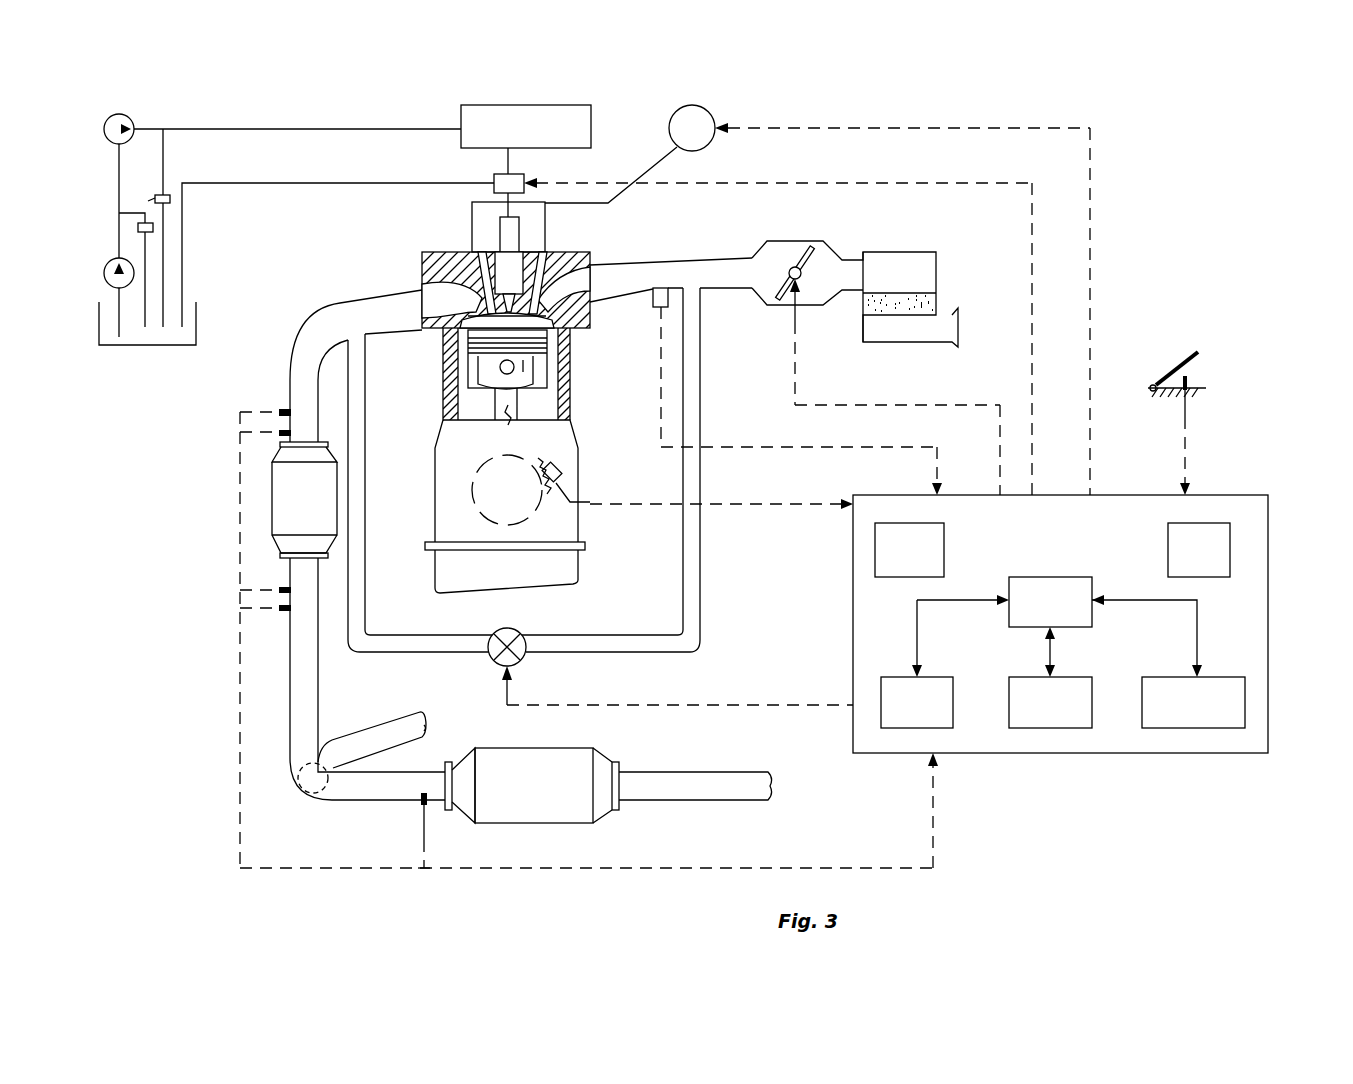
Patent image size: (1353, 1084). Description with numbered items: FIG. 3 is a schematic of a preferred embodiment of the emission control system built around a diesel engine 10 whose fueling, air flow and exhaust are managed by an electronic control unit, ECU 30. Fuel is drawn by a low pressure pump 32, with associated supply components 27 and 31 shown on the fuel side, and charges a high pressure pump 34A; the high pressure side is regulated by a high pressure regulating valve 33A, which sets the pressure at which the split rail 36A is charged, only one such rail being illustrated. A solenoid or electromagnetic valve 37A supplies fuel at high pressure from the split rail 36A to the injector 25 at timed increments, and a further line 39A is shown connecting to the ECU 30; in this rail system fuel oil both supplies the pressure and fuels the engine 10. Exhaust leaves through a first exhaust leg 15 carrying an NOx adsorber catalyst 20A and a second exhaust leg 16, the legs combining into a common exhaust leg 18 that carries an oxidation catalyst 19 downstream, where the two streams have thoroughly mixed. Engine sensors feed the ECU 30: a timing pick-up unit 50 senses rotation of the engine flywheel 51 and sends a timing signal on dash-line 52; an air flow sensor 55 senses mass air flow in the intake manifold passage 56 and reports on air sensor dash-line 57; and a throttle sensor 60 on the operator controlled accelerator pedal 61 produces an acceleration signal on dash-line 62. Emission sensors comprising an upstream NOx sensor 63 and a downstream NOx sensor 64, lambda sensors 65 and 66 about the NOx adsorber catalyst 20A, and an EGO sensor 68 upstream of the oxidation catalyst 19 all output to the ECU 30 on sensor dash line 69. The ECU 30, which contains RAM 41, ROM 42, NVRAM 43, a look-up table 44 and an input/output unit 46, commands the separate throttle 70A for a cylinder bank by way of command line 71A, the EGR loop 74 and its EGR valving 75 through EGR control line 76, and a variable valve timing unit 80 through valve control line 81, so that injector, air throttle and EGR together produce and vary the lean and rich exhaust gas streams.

The engine 10 is at (412, 441).
The first exhaust leg 15 is at (289, 676).
The second exhaust leg 16 is at (373, 722).
The common exhaust leg 18 is at (393, 802).
The oxidation catalyst 19 is at (537, 823).
The NOx adsorber catalyst 20A is at (272, 497).
The injector 25 is at (519, 240).
The fuel tank 27 is at (196, 320).
The ECU 30 is at (1058, 659).
The fuel filter 31 is at (153, 227).
The low pressure pump 32 is at (126, 288).
The high pressure regulating valve 33A is at (170, 196).
The high pressure pump 34A is at (131, 120).
The split rail 36A is at (591, 124).
The solenoid valve 37A is at (527, 172).
The signal line 39A is at (812, 181).
The RAM 41 is at (910, 728).
The ROM 42 is at (1070, 728).
The NVRAM 43 is at (1200, 728).
The look-up table 44 is at (875, 550).
The input/output unit 46 is at (1230, 550).
The timing pick-up unit 50 is at (560, 474).
The engine flywheel 51 is at (545, 497).
The timing signal line 52 is at (712, 515).
The air flow sensor 55 is at (653, 306).
The intake manifold passage 56 is at (671, 281).
The air sensor line 57 is at (728, 443).
The throttle sensor 60 is at (1190, 381).
The accelerator pedal 61 is at (1163, 377).
The acceleration sensor line 62 is at (1193, 457).
The upstream NOx sensor 63 is at (279, 435).
The downstream NOx sensor 64 is at (279, 610).
The lambda sensor 65 is at (281, 409).
The emission sensor 66 is at (279, 590).
The EGO sensor 68 is at (430, 806).
The sensor line 69 is at (532, 875).
The throttle 70A is at (790, 268).
The control line 71A is at (878, 379).
The EGR loop 74 is at (700, 345).
The EGR valving 75 is at (527, 625).
The EGR control line 76 is at (713, 697).
The variable valve timing unit 80 is at (712, 113).
The valve control line 81 is at (958, 133).